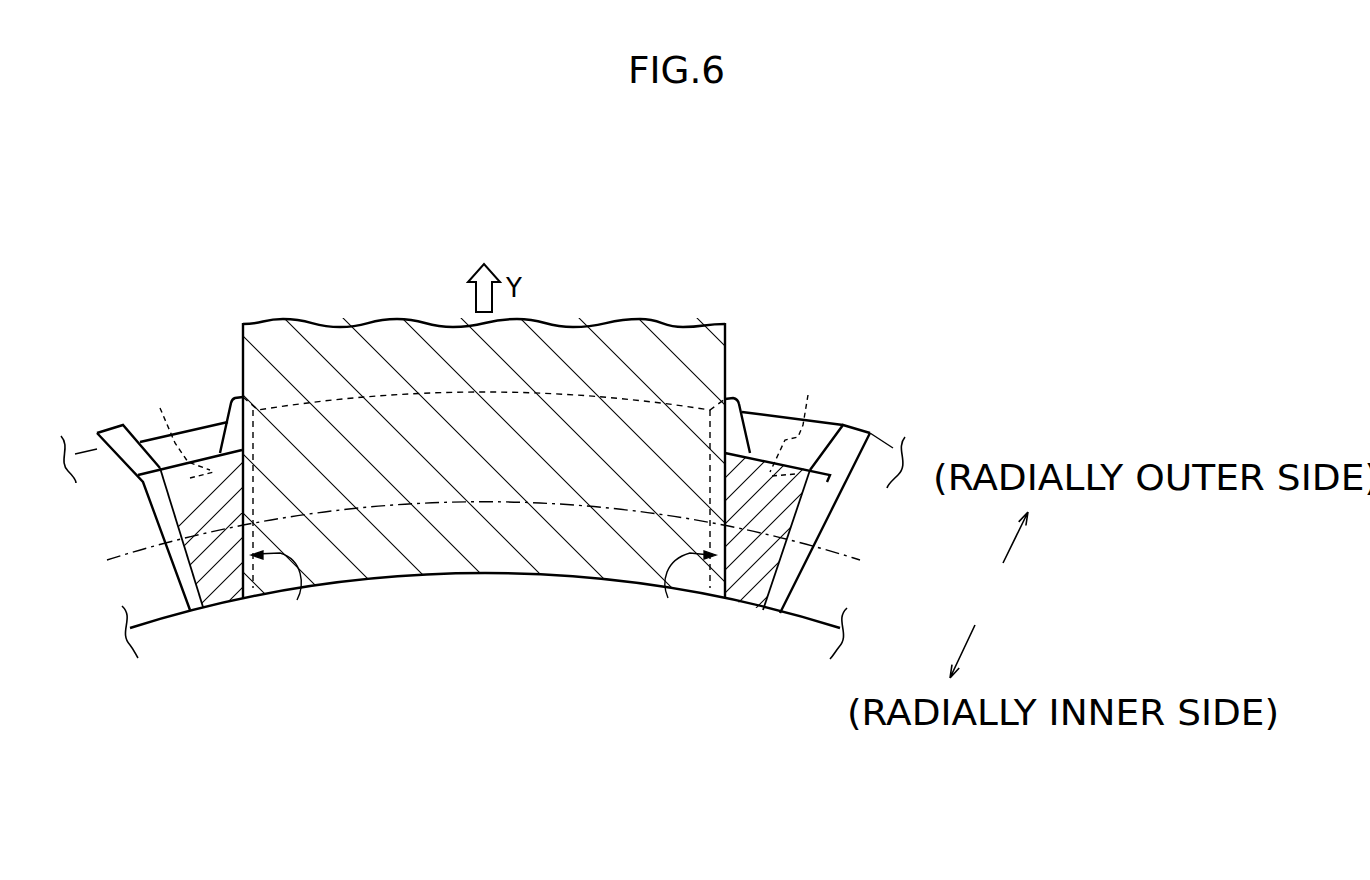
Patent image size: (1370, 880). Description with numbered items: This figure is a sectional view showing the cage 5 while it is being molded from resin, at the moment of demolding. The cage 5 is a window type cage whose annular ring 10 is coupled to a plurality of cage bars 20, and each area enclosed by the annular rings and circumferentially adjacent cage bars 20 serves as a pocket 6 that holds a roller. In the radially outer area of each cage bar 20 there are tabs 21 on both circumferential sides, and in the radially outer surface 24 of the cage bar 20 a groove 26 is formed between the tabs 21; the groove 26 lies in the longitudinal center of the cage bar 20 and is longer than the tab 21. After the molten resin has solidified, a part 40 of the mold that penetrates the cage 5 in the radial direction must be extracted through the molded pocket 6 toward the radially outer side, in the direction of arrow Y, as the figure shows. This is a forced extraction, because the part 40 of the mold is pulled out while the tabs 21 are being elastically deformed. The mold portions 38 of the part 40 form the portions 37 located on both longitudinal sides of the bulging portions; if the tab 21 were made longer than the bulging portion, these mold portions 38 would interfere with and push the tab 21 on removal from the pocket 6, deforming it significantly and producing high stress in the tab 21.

The cage 5 is at (881, 446).
The pocket 6 is at (484, 538).
The annular ring 10 is at (808, 618).
The cage bar 20 is at (185, 518).
The tab 21 is at (238, 382).
The radially outer surface 24 is at (206, 458).
The groove 26 is at (482, 424).
The portion 37 is at (254, 579).
The mold portion 38 is at (297, 600).
The part of the mold 40 is at (388, 556).